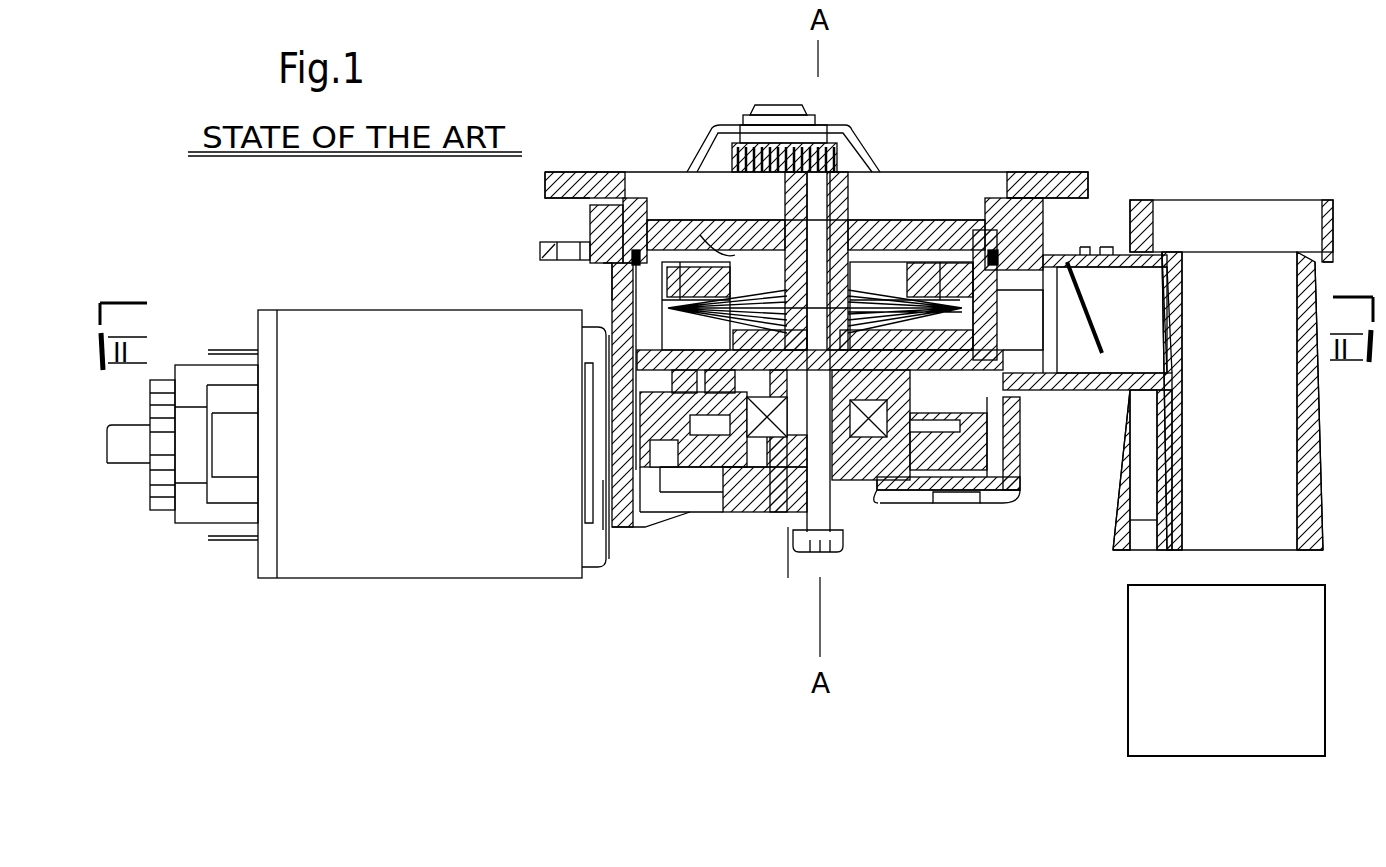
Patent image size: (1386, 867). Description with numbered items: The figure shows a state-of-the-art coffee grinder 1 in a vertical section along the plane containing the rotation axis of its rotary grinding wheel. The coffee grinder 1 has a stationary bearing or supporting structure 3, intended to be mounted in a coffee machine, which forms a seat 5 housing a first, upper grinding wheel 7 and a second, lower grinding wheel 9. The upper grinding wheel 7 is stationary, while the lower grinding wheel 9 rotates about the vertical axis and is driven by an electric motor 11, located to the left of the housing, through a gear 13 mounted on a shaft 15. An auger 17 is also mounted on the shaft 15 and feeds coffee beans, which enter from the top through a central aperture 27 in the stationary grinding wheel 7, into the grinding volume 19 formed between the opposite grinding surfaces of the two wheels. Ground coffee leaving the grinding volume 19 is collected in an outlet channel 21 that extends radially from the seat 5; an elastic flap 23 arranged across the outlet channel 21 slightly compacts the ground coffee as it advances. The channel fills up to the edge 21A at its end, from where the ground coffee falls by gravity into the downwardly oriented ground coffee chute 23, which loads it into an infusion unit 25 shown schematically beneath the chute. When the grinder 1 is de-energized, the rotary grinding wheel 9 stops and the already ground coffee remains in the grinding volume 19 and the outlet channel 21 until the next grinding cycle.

The coffee grinder 1 is at (1040, 152).
The stationary bearing or supporting structure 3 is at (545, 245).
The seat 5 is at (617, 283).
The first, upper grinding wheel 7 is at (990, 290).
The second, lower grinding wheel 9 is at (992, 340).
The electric motor 11 is at (414, 437).
The gear 13 is at (677, 460).
The shaft 15 is at (878, 503).
The auger 17 is at (880, 225).
The grinding volume 19 is at (770, 303).
The outlet channel 21 is at (1145, 357).
The edge 21A is at (1184, 360).
The ground coffee chute 23 is at (1070, 305).
The infusion unit 25 is at (1236, 685).
The aperture 27 is at (733, 253).